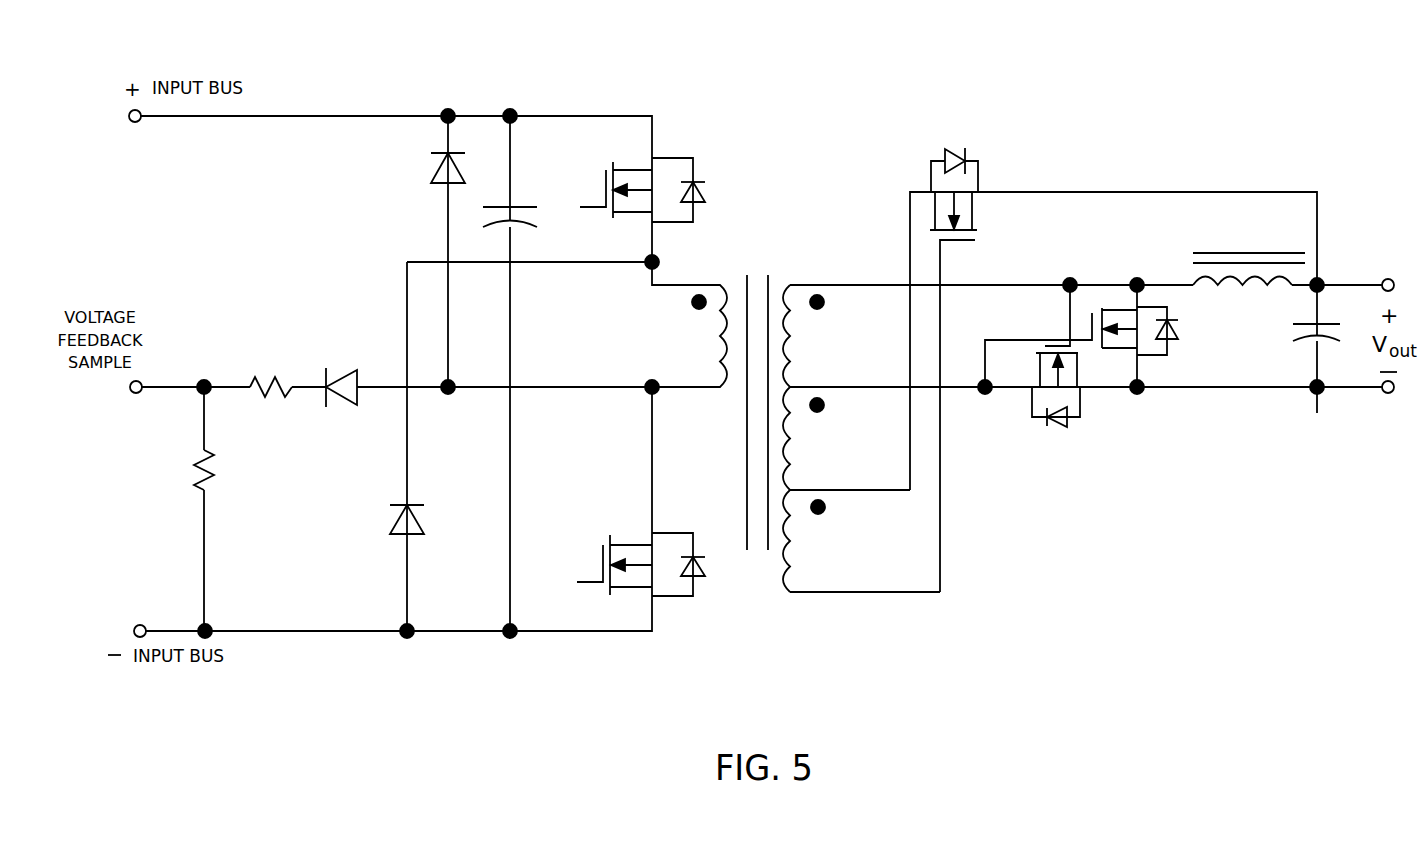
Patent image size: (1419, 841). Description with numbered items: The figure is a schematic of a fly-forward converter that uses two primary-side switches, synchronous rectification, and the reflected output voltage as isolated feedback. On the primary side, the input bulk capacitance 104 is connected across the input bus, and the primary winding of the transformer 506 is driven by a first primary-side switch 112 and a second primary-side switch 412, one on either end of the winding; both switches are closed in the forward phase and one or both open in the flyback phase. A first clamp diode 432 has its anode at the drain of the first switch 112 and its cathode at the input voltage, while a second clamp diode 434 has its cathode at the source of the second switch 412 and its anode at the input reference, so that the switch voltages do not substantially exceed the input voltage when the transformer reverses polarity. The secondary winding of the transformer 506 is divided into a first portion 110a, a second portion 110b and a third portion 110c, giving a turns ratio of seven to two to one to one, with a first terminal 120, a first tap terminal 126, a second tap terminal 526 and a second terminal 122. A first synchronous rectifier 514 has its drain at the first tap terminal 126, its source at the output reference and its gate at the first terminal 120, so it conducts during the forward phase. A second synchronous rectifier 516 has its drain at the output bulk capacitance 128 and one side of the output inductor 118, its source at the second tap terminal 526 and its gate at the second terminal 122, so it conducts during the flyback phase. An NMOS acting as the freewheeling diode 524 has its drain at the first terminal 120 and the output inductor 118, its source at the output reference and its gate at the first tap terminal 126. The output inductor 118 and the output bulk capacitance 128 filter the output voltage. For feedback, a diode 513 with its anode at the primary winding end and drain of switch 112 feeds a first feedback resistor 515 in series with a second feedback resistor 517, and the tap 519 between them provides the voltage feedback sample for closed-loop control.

The second primary-side switch 412 is at (678, 138).
The first clamp diode 432 is at (443, 183).
The input bulk capacitance 104 is at (522, 207).
The second clamp diode 434 is at (421, 523).
The transformer 506 is at (746, 243).
The second synchronous rectifier 516 is at (935, 161).
The first terminal 120 is at (862, 285).
The first tap terminal 126 is at (883, 387).
The second tap terminal 526 is at (882, 490).
The second terminal 122 is at (882, 592).
The output inductor 118 is at (1193, 278).
The output bulk capacitance 128 is at (1305, 324).
The freewheeling diode 524 is at (1155, 355).
The first synchronous rectifier 514 is at (1072, 420).
The tap 519 is at (168, 387).
The first feedback resistor 515 is at (268, 397).
The diode 513 is at (360, 370).
The second feedback resistor 517 is at (204, 490).
The first primary-side switch 112 is at (712, 594).
The first portion of the secondary winding 110a is at (814, 336).
The second portion of the secondary winding 110b is at (818, 438).
The third portion of the secondary winding 110c is at (818, 541).